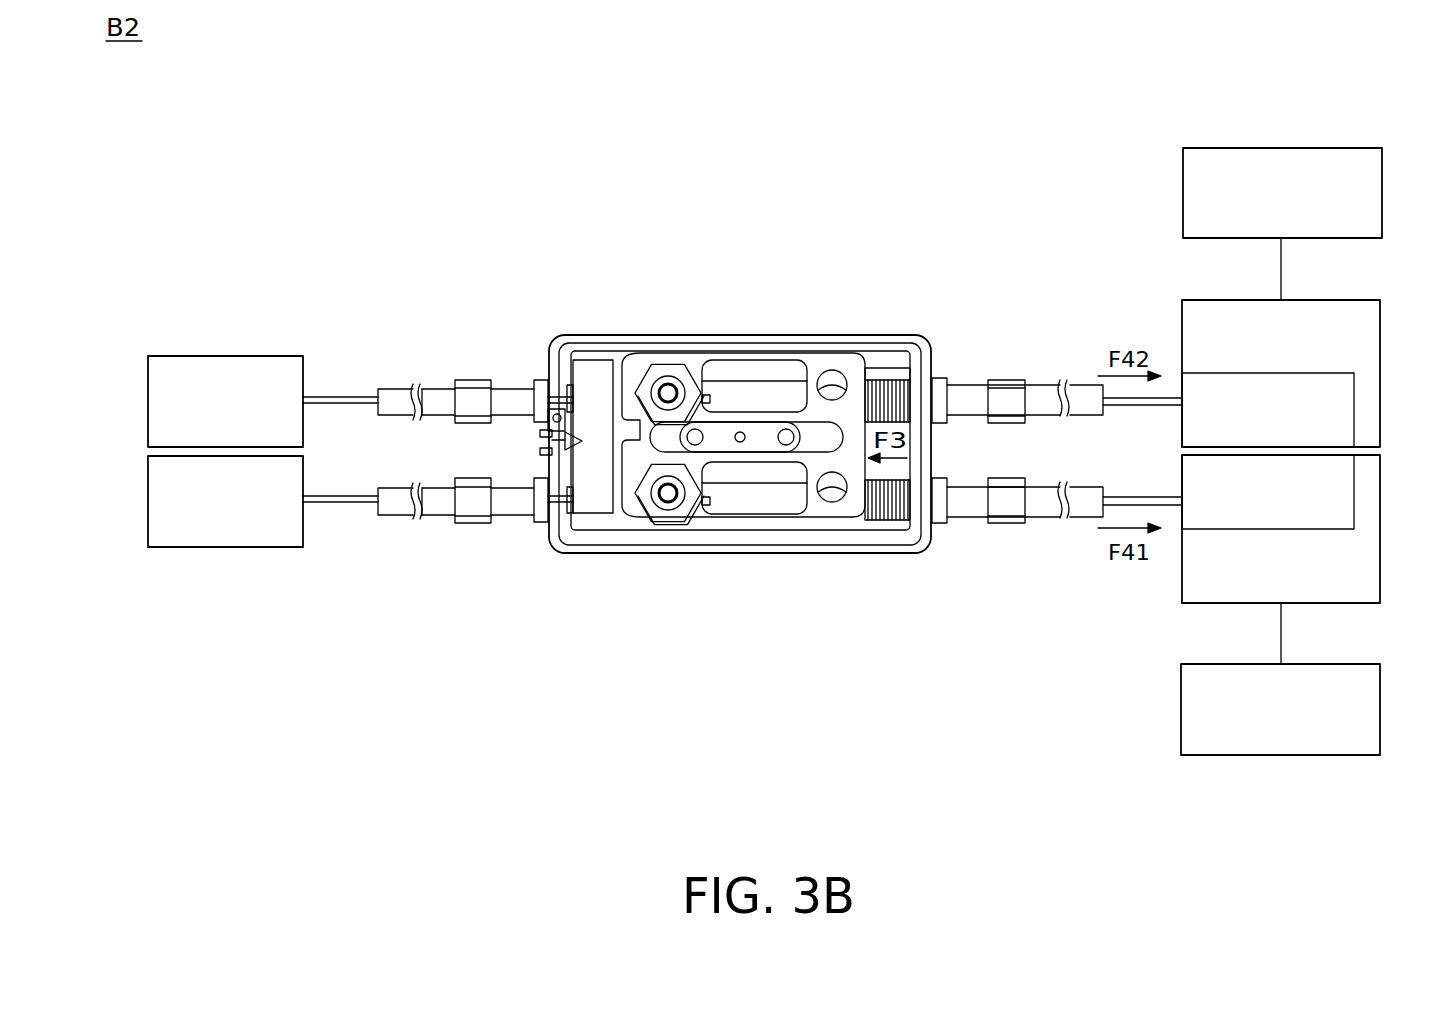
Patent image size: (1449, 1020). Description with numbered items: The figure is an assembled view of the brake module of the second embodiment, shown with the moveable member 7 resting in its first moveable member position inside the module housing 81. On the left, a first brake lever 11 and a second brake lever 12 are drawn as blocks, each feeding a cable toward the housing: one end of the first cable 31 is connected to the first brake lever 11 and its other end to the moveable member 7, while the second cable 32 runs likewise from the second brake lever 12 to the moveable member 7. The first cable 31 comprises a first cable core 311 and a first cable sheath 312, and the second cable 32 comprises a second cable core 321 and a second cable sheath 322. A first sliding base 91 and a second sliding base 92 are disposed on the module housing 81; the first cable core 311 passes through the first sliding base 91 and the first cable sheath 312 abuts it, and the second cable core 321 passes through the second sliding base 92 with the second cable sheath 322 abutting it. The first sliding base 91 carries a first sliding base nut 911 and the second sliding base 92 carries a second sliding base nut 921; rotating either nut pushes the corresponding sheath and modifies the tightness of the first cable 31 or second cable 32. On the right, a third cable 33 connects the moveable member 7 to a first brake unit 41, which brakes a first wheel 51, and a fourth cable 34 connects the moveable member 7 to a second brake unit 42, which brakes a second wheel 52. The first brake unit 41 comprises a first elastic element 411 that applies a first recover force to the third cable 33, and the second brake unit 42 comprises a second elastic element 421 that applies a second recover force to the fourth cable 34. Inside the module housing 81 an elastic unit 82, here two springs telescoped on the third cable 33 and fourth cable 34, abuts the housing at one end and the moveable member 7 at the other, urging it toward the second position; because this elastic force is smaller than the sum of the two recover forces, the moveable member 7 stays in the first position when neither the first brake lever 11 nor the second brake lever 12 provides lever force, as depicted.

The first brake lever 11 is at (147, 498).
The second brake lever 12 is at (147, 400).
The first cable 31 is at (377, 534).
The first cable core 311 is at (600, 502).
The first cable sheath 312 is at (437, 515).
The second cable 32 is at (377, 370).
The second cable core 321 is at (600, 400).
The second cable sheath 322 is at (436, 388).
The third cable 33 is at (1086, 536).
The fourth cable 34 is at (1085, 367).
The first brake unit 41 is at (1380, 530).
The first elastic element 411 is at (1354, 493).
The second brake unit 42 is at (1380, 375).
The second elastic element 421 is at (1354, 408).
The first wheel 51 is at (1382, 710).
The second wheel 52 is at (1382, 193).
The moveable member 7 is at (806, 345).
The module housing 81 is at (765, 542).
The elastic unit 82 is at (891, 380).
The first sliding base 91 is at (515, 512).
The first sliding base nut 911 is at (475, 520).
The second sliding base 92 is at (515, 390).
The second sliding base nut 921 is at (474, 386).